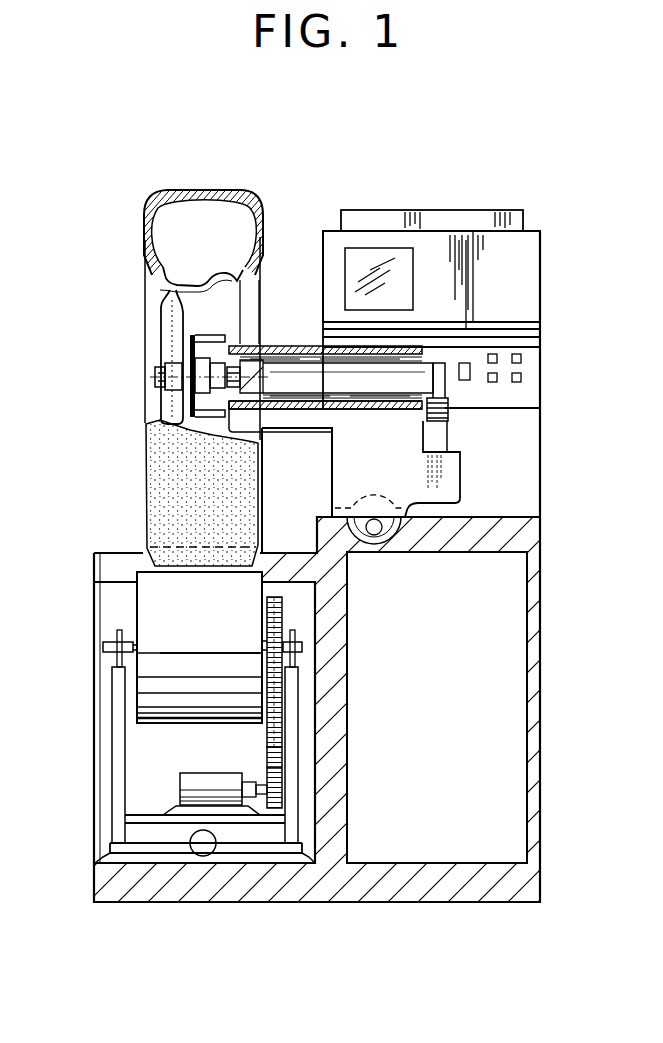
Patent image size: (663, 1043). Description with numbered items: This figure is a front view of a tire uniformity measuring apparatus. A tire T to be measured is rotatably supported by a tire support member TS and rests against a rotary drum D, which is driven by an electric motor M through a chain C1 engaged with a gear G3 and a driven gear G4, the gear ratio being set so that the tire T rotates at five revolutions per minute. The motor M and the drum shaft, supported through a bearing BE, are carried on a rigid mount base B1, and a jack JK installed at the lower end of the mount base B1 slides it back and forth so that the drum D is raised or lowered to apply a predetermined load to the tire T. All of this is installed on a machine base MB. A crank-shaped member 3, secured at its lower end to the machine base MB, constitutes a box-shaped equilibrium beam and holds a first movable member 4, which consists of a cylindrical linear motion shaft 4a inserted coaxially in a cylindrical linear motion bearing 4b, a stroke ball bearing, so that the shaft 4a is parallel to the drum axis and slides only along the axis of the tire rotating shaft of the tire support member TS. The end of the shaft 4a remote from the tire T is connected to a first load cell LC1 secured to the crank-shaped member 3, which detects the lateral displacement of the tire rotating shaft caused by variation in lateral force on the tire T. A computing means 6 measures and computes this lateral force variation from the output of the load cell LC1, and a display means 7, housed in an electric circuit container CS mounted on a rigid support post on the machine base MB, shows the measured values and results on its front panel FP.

The display means 7 is at (333, 192).
The tire T is at (212, 190).
The front panel FP is at (493, 242).
The electric circuit container CS is at (543, 266).
The computing means 6 is at (556, 381).
The tire support member TS is at (175, 367).
The first movable member 4 is at (280, 382).
The cylindrical linear motion shaft 4a is at (372, 409).
The cylindrical linear motion bearing 4b is at (397, 409).
The first load cell LC1 is at (448, 418).
The crank-shaped member 3 is at (343, 475).
The rotary drum D is at (143, 605).
The bearing BE is at (117, 631).
The driven gear G4 is at (282, 612).
The chain C1 is at (282, 735).
The mount base B1 is at (183, 817).
The electric motor M is at (220, 780).
The gear G3 is at (282, 790).
The jack JK is at (202, 855).
The machine base MB is at (413, 887).